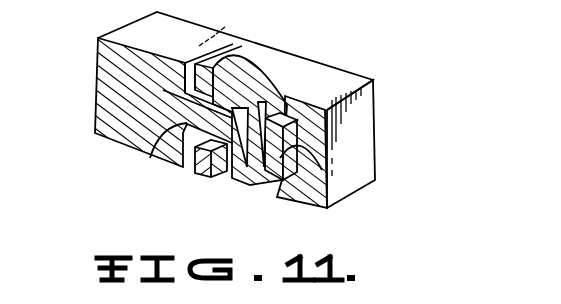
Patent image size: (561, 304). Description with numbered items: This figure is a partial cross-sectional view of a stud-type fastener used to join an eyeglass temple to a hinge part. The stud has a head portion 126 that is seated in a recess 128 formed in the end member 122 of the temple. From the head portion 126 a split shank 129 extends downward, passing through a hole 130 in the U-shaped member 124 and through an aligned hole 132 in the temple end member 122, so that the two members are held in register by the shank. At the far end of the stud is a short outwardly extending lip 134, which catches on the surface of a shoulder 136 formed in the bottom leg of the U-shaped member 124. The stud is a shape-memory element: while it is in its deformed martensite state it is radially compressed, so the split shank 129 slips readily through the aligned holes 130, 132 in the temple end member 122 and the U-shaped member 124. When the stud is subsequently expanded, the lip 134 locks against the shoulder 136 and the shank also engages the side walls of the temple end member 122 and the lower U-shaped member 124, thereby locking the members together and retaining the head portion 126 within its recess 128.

The end member of the temple 122 is at (100, 131).
The U-shaped member 124 is at (380, 117).
The head portion 126 is at (262, 70).
The recess 128 is at (234, 45).
The split shank 129 is at (245, 172).
The hole 130 is at (298, 98).
The aligned hole 132 is at (321, 168).
The lip 134 is at (277, 184).
The shoulder 136 is at (152, 156).